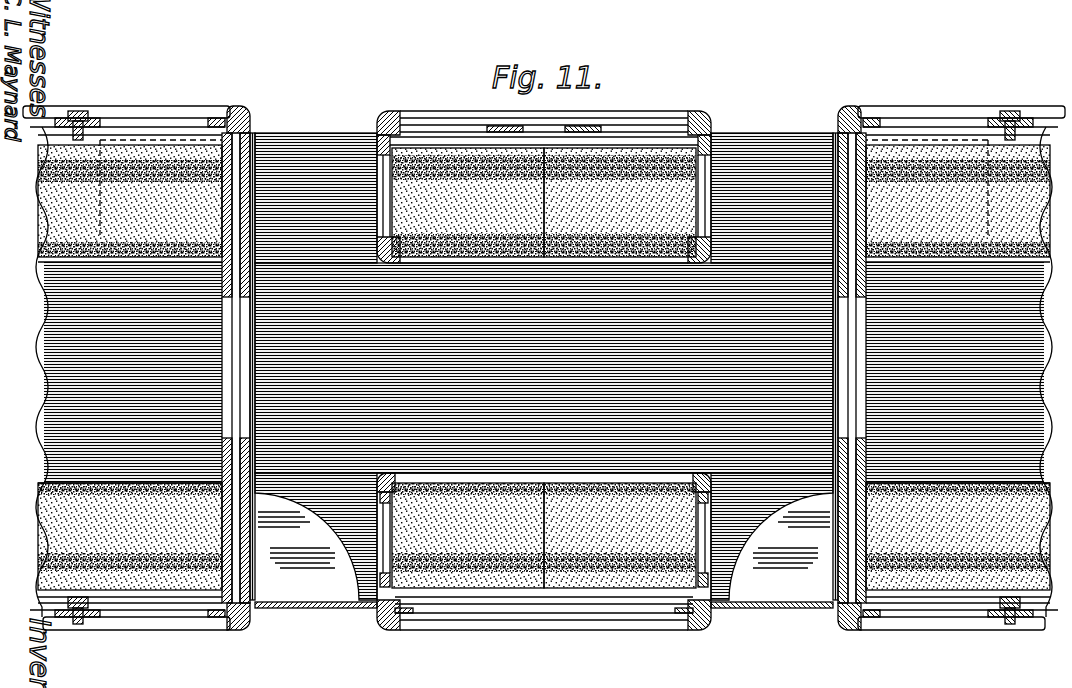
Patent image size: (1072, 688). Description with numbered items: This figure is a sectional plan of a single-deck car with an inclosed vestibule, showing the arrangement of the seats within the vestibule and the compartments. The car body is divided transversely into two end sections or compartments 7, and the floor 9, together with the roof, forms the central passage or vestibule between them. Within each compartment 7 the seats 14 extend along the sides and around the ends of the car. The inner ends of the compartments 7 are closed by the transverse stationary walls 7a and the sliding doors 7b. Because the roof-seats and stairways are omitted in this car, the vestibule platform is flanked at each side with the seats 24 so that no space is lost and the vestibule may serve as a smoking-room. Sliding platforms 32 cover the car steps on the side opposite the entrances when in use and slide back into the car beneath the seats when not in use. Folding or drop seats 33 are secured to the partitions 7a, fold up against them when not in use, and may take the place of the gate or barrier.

The end section or compartment 7 is at (544, 372).
The transverse stationary wall 7a is at (243, 214).
The sliding door 7b is at (235, 390).
The floor 9 is at (544, 368).
The seat 14 is at (544, 368).
The seat 24 is at (544, 370).
The sliding platform 32 is at (100, 218).
The folding or drop seat 33 is at (253, 226).